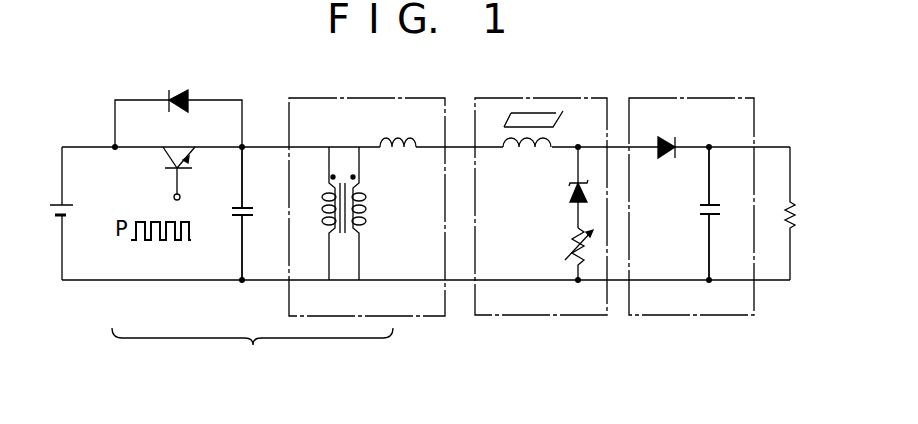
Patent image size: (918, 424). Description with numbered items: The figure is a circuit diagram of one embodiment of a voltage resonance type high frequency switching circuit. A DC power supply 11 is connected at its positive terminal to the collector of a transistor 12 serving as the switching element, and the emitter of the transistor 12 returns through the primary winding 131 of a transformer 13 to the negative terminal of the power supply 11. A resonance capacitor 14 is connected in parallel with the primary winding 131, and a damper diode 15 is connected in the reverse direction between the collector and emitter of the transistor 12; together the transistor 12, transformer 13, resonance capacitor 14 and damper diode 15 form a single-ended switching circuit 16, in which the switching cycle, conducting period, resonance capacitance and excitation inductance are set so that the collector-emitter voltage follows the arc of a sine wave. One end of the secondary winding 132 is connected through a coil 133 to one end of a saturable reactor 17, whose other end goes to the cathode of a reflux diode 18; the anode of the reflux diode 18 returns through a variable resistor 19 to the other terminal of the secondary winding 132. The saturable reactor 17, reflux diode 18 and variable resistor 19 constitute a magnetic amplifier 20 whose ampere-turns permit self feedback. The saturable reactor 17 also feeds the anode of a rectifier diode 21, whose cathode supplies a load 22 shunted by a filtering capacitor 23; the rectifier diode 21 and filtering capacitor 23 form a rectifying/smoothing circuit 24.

The DC power supply 11 is at (74, 208).
The transistor 12 is at (160, 166).
The transformer 13 is at (369, 98).
The primary winding 131 is at (324, 197).
The secondary winding 132 is at (365, 218).
The coil 133 is at (402, 160).
The resonance capacitor 14 is at (232, 206).
The damper diode 15 is at (170, 92).
The single-ended switching circuit 16 is at (252, 351).
The saturable reactor 17 is at (524, 150).
The reflux diode 18 is at (572, 195).
The variable resistor 19 is at (572, 244).
The magnetic amplifier 20 is at (551, 98).
The rectifier diode 21 is at (670, 159).
The load 22 is at (784, 214).
The filtering capacitor 23 is at (697, 211).
The rectifying/smoothing circuit 24 is at (679, 98).